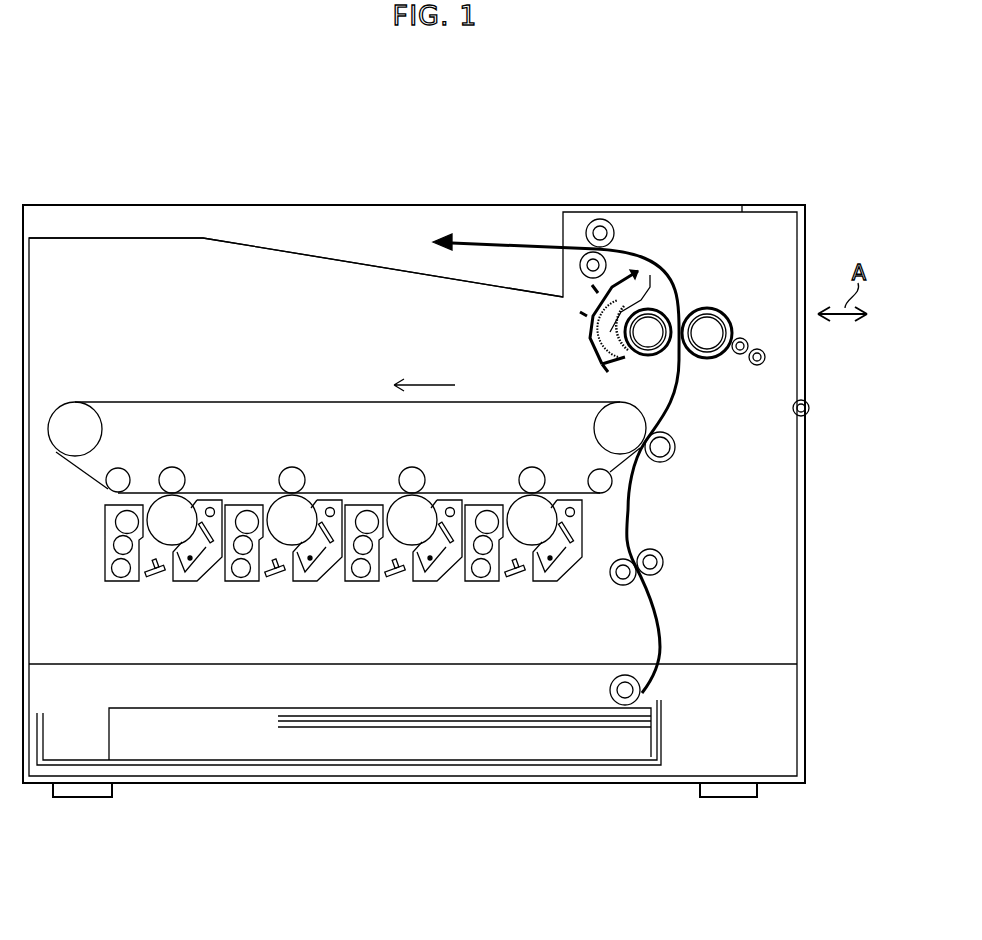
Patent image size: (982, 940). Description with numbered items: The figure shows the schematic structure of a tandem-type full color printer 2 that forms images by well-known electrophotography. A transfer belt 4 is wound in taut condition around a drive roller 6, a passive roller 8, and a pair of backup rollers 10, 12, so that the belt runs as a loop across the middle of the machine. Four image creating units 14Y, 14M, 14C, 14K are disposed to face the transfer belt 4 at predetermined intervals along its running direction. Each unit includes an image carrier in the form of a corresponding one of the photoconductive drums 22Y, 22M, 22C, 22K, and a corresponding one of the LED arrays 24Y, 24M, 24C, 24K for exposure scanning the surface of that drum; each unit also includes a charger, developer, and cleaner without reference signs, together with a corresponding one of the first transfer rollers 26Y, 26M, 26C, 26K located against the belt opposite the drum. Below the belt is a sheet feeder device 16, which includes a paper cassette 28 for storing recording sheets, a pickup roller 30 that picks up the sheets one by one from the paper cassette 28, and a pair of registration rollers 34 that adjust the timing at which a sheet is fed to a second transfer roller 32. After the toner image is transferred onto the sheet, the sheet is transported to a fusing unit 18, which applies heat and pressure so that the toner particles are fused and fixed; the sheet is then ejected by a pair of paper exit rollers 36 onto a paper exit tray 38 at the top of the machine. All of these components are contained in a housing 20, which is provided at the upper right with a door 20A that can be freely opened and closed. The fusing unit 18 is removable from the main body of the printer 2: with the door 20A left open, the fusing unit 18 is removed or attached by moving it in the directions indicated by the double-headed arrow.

The tandem-type full color printer 2 is at (160, 77).
The transfer belt 4 is at (284, 400).
The drive roller 6 is at (598, 410).
The passive roller 8 is at (70, 415).
The backup roller 10 is at (118, 467).
The backup roller 12 is at (598, 468).
The image creating unit 14Y is at (163, 579).
The image creating unit 14M is at (283, 579).
The image creating unit 14C is at (403, 579).
The image creating unit 14K is at (523, 579).
The sheet feeder device 16 is at (726, 608).
The fusing unit 18 is at (677, 272).
The housing 20 is at (806, 518).
The door 20A is at (808, 228).
The photoconductive drum 22Y is at (172, 520).
The photoconductive drum 22M is at (292, 520).
The photoconductive drum 22C is at (412, 520).
The photoconductive drum 22K is at (532, 520).
The LED array 24Y is at (153, 582).
The LED array 24M is at (273, 582).
The LED array 24C is at (393, 582).
The LED array 24K is at (513, 582).
The first transfer roller 26Y is at (172, 466).
The first transfer roller 26M is at (292, 466).
The first transfer roller 26C is at (412, 466).
The first transfer roller 26K is at (532, 466).
The paper cassette 28 is at (663, 738).
The pickup roller 30 is at (608, 690).
The second transfer roller 32 is at (677, 447).
The registration rollers 34 is at (663, 547).
The paper exit rollers 36 is at (578, 233).
The paper exit tray 38 is at (330, 258).